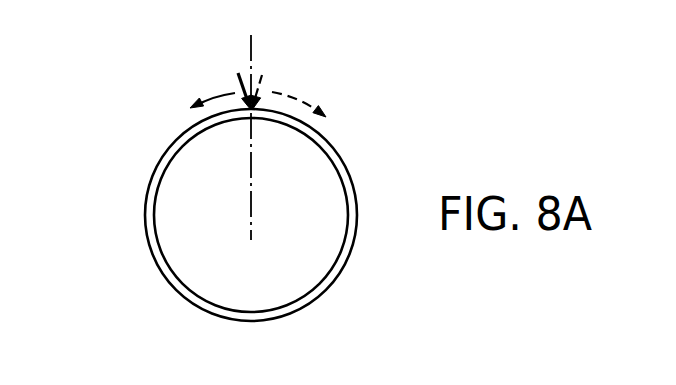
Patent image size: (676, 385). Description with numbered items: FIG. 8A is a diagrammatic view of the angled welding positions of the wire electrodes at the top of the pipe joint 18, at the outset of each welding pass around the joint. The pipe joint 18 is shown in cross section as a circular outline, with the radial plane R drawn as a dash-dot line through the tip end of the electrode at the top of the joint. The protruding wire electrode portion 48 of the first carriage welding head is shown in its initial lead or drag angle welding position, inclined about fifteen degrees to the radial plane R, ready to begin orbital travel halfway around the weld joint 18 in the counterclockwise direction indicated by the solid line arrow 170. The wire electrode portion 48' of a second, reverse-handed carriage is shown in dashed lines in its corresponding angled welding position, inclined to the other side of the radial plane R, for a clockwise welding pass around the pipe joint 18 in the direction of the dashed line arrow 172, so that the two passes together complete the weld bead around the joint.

The pipe joint 18 is at (151, 193).
The radial plane R is at (253, 43).
The protruding portion of the wire electrode 48 is at (205, 74).
The wire electrode portion of the second carriage 48' is at (311, 73).
The solid line arrow 170 is at (216, 94).
The dashed line arrow 172 is at (298, 95).